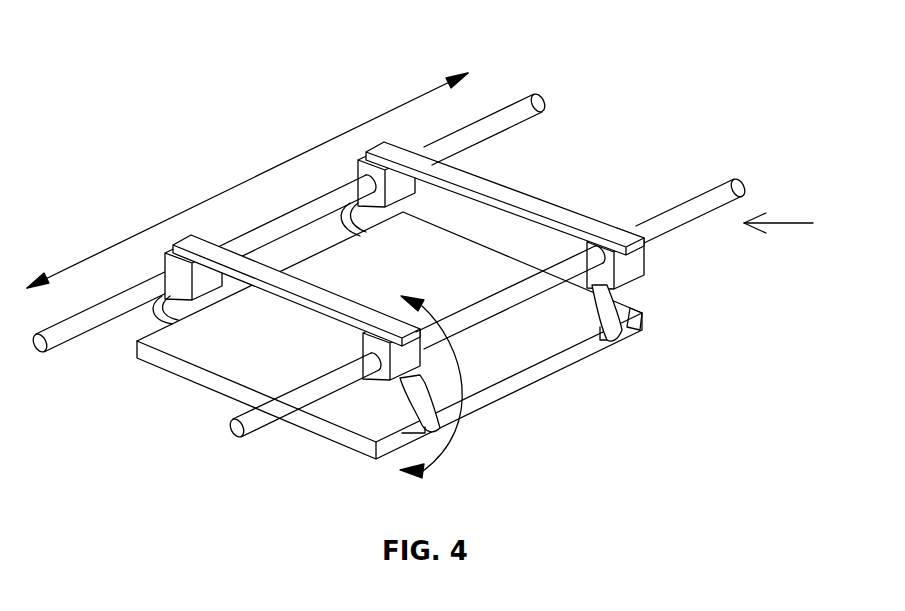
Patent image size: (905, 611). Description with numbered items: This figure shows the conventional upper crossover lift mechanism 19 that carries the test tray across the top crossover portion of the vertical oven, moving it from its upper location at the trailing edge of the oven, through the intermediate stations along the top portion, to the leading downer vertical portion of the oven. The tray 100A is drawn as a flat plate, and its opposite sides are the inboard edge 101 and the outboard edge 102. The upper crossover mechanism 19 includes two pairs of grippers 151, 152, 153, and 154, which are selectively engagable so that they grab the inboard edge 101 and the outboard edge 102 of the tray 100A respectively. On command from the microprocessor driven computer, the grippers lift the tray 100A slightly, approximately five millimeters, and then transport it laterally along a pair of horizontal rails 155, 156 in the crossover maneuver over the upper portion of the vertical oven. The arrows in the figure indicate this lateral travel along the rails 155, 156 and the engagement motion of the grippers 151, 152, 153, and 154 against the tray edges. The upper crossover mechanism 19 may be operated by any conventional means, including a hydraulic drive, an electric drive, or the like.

The upper crossover lift mechanism 19 is at (794, 225).
The tray 100A is at (636, 314).
The inboard edge 101 is at (137, 343).
The outboard edge 102 is at (380, 455).
The gripper 151 is at (167, 253).
The gripper 152 is at (357, 158).
The gripper 153 is at (445, 418).
The gripper 154 is at (628, 323).
The horizontal rail 155 is at (544, 109).
The horizontal rail 156 is at (745, 191).